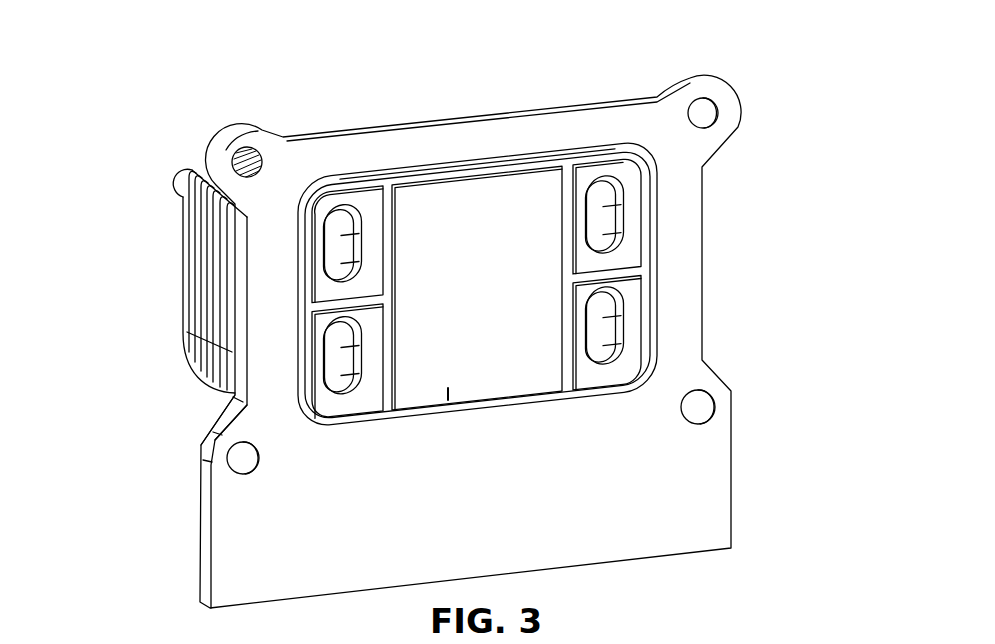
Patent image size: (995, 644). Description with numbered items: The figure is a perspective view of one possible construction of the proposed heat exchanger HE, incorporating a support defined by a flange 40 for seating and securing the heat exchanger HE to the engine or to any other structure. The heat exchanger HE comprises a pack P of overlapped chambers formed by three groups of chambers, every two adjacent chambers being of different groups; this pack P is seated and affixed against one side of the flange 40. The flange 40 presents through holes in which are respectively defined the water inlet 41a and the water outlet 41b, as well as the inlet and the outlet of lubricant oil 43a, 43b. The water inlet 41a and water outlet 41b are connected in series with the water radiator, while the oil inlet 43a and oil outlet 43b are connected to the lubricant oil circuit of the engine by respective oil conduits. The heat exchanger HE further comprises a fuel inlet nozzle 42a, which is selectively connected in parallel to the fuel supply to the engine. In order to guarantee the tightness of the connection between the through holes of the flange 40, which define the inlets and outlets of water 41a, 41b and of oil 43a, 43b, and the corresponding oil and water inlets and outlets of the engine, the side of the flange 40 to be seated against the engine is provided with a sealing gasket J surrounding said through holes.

The flange 40 is at (703, 263).
The water inlet 41a is at (352, 351).
The water outlet 41b is at (617, 212).
The lubricant oil inlet 43a is at (358, 241).
The lubricant oil outlet 43b is at (618, 323).
The fuel inlet nozzle 42a is at (183, 172).
The pack of chambers P is at (176, 254).
The heat exchanger HE is at (201, 406).
The sealing gasket J is at (448, 388).